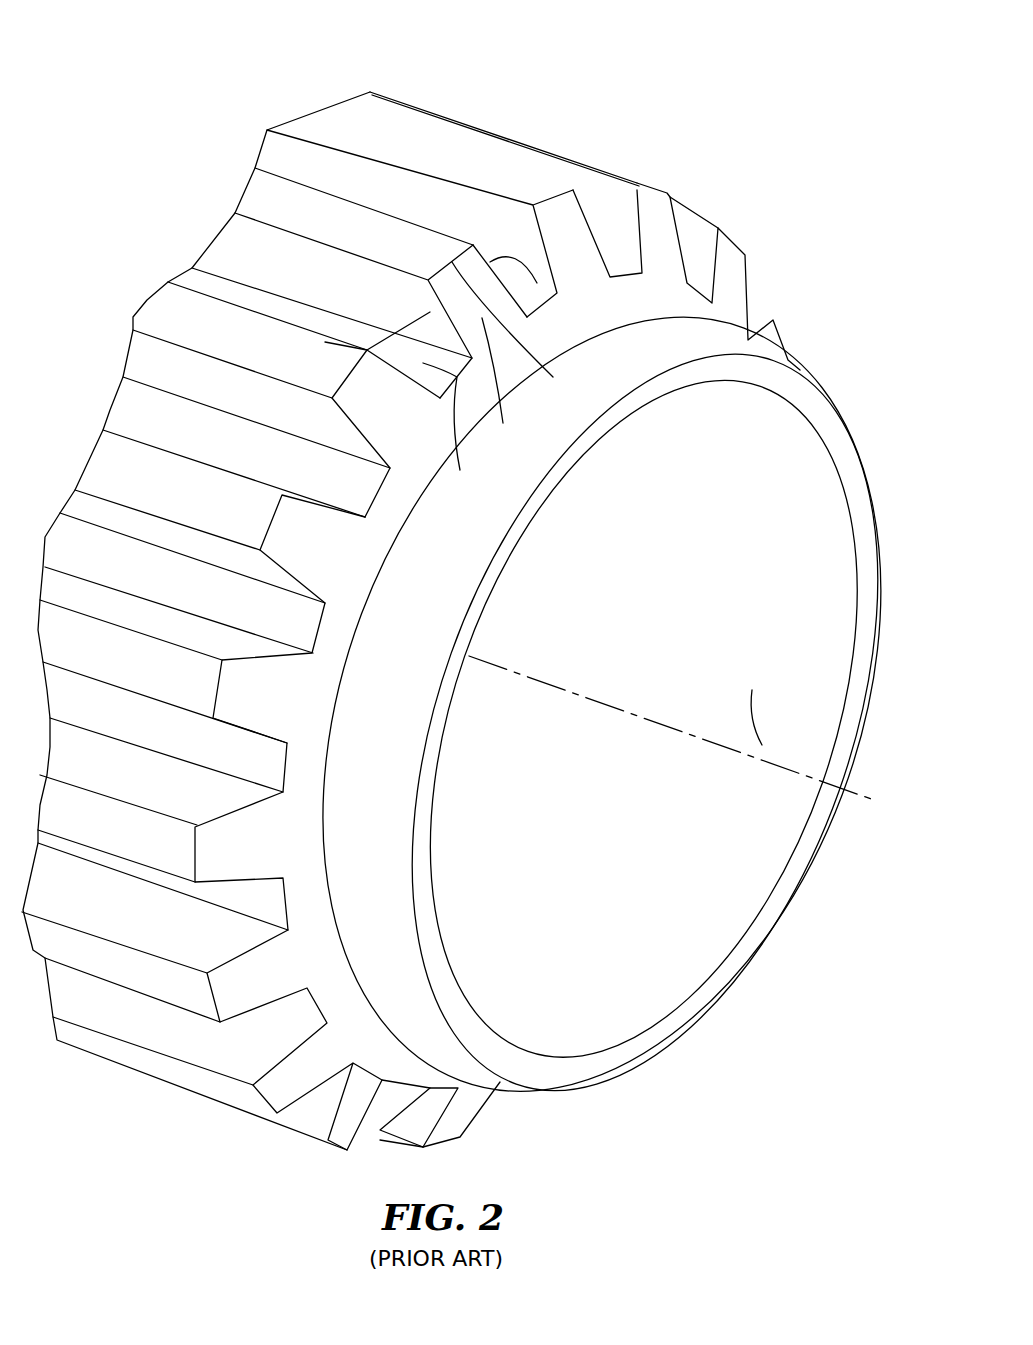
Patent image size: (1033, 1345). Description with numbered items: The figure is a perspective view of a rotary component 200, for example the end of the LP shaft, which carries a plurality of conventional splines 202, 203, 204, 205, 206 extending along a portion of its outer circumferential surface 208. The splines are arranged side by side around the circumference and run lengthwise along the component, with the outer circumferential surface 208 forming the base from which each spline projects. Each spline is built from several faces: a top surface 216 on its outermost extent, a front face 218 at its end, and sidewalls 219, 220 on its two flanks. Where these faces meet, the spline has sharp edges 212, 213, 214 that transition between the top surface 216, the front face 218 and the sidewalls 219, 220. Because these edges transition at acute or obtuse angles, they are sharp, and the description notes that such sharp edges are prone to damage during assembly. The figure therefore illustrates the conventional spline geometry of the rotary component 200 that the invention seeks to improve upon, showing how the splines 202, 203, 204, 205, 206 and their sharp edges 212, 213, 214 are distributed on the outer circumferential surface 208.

The rotary component 200 is at (652, 90).
The spline 202 is at (265, 200).
The spline 203 is at (175, 308).
The spline 204 is at (115, 467).
The spline 205 is at (180, 673).
The spline 206 is at (133, 835).
The outer circumferential surface 208 is at (457, 434).
The sharp edge 212 is at (527, 332).
The sharp edge 213 is at (354, 340).
The sharp edge 214 is at (560, 297).
The top surface 216 is at (392, 245).
The front face 218 is at (518, 382).
The sidewall 219 is at (623, 218).
The sidewall 220 is at (233, 650).